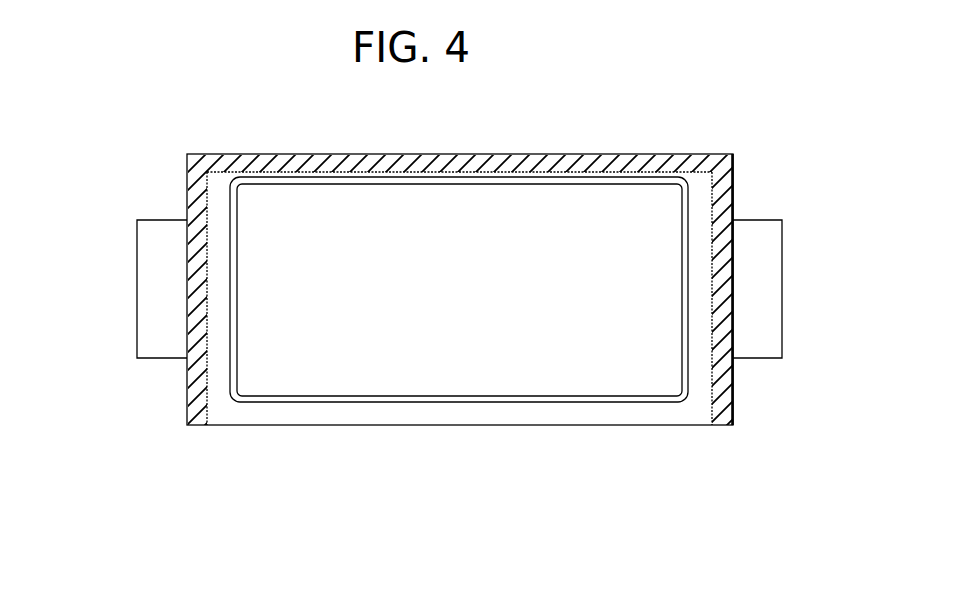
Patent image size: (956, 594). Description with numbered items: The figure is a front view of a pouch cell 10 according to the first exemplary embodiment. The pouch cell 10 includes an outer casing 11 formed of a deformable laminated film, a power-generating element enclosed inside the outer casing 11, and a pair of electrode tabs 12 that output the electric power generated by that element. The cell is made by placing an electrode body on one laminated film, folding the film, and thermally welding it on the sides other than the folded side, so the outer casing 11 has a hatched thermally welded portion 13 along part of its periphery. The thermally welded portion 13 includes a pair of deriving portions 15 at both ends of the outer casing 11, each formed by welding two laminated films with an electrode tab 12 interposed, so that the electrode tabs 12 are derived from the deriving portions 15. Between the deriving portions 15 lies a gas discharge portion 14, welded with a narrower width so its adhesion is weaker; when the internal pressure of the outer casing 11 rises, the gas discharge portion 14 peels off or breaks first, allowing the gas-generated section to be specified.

The pouch cell 10 is at (707, 473).
The outer casing 11 is at (340, 416).
The electrode tab 12 is at (148, 275).
The thermally welded portion 13 is at (187, 175).
The gas discharge portion 14 is at (458, 155).
The deriving portion 15 is at (188, 355).